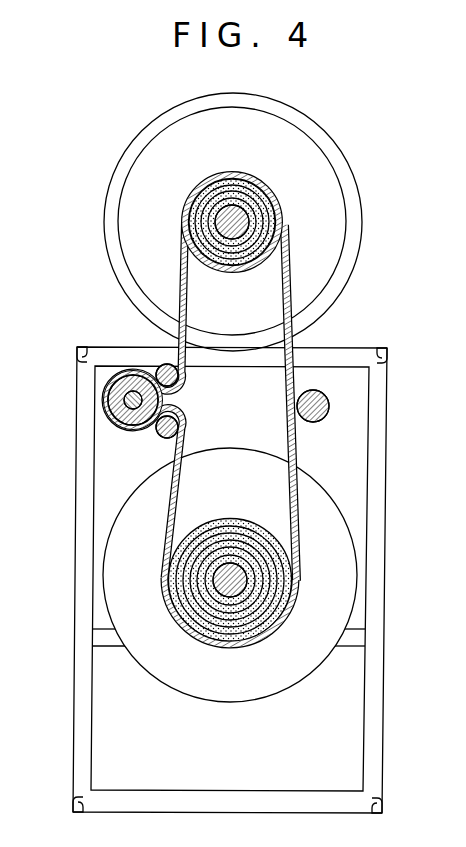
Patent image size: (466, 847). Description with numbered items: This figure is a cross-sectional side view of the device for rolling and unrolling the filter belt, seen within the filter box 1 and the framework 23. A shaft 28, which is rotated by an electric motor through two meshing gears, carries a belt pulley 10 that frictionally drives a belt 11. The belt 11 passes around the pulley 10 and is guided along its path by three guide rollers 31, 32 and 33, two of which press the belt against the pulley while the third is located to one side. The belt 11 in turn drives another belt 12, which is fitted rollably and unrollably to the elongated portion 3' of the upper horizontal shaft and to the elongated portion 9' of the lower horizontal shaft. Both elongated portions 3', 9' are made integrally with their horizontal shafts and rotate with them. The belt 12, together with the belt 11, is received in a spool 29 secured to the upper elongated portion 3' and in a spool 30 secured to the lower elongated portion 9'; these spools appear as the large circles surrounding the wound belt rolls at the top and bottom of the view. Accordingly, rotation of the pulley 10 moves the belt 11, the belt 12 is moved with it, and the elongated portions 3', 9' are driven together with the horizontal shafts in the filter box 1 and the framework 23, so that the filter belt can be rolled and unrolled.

The filter box 1 is at (320, 127).
The spool 29 is at (148, 162).
The elongated portion of upper horizontal shaft 3' is at (243, 211).
The elongated portion of lower horizontal shaft 9' is at (230, 600).
The belt pulley 10 is at (108, 383).
The belt 11 is at (180, 262).
The belt 12 is at (225, 265).
The framework 23 is at (387, 510).
The shaft 28 is at (127, 402).
The spool 30 is at (298, 665).
The guide roller 31 is at (157, 361).
The guide roller 32 is at (157, 433).
The guide roller 33 is at (325, 420).